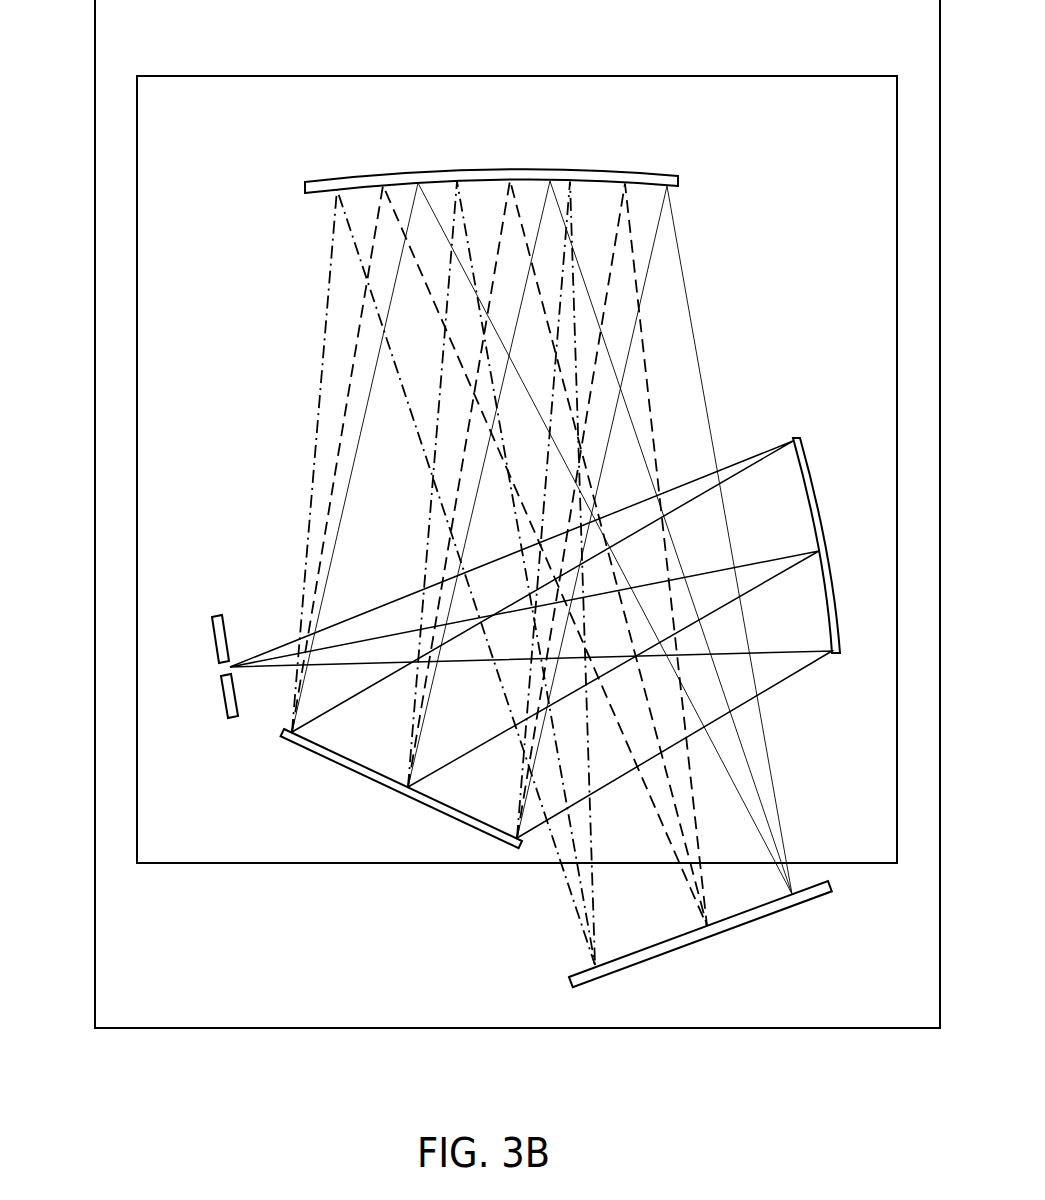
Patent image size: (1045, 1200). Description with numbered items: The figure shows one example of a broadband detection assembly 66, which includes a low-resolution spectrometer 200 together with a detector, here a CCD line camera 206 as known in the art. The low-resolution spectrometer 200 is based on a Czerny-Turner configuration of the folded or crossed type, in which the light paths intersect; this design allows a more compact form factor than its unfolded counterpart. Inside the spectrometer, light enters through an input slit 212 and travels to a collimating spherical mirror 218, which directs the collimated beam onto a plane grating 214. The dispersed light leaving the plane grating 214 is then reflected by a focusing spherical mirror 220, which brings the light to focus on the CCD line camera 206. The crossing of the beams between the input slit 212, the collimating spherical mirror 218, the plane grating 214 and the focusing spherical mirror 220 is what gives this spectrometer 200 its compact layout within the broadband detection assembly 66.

The broadband detection assembly 66 is at (95, 105).
The low-resolution spectrometer 200 is at (318, 76).
The CCD line camera 206 is at (765, 918).
The input slit 212 is at (211, 638).
The plane grating 214 is at (358, 778).
The collimating spherical mirror 218 is at (810, 468).
The focusing spherical mirror 220 is at (604, 171).